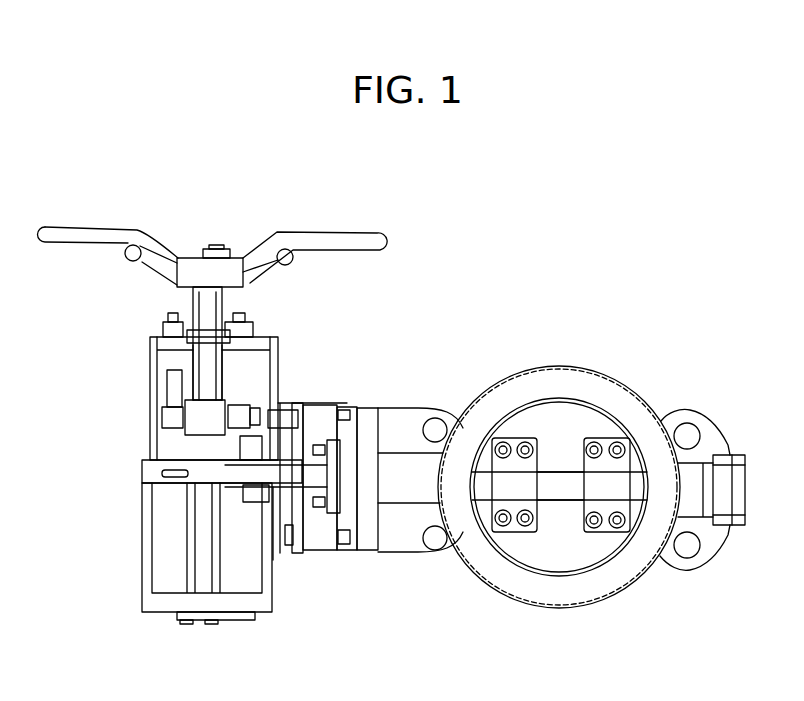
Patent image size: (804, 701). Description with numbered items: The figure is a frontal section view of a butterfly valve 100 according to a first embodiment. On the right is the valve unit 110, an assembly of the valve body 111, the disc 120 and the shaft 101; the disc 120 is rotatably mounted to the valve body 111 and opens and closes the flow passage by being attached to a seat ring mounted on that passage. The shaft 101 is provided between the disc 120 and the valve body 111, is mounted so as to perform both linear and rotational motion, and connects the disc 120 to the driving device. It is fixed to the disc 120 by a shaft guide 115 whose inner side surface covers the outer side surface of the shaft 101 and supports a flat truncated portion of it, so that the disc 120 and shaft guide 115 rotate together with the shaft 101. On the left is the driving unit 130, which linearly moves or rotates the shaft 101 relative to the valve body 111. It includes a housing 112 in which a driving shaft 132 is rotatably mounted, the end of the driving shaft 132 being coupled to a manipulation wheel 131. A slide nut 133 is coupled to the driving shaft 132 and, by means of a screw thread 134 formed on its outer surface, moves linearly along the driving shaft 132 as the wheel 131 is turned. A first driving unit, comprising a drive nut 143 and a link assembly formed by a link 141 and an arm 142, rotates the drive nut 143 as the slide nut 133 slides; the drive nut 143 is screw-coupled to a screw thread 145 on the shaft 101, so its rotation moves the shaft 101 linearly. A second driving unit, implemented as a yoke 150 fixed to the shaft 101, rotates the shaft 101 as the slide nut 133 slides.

The butterfly valve 100 is at (708, 241).
The valve unit 110 is at (645, 371).
The valve body 111 is at (507, 397).
The shaft 101 is at (563, 475).
The shaft guide 115 is at (610, 492).
The disc 120 is at (521, 552).
The driving unit 130 is at (370, 331).
The manipulation wheel 131 is at (370, 235).
The driving shaft 132 is at (207, 377).
The slide nut 133 is at (198, 418).
The screw thread 134 is at (195, 380).
The link 141 is at (236, 434).
The arm 142 is at (253, 448).
The drive nut 143 is at (263, 493).
The screw thread 145 is at (293, 500).
The yoke 150 is at (173, 397).
The housing 112 is at (148, 578).